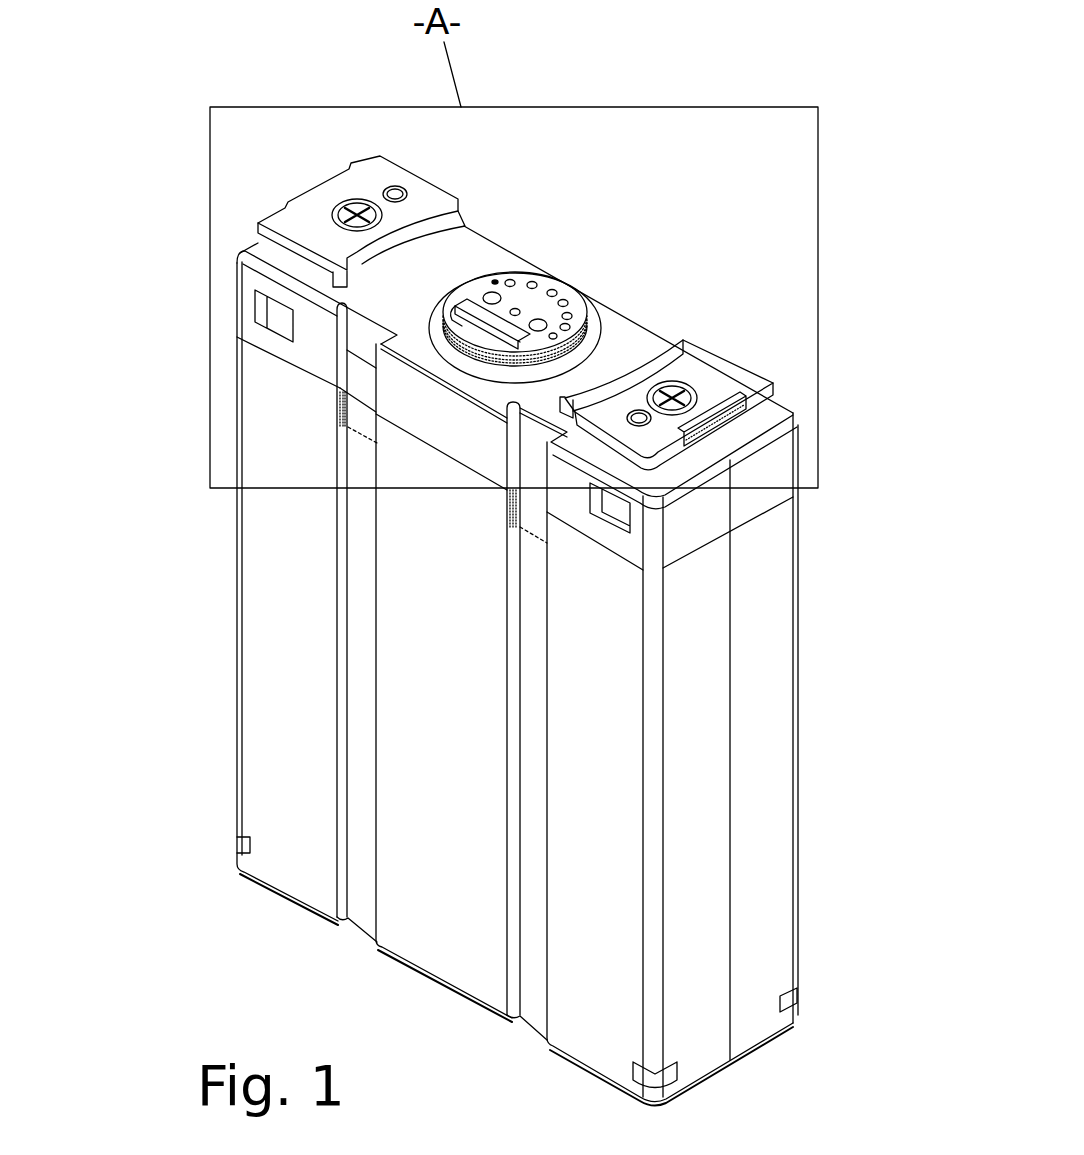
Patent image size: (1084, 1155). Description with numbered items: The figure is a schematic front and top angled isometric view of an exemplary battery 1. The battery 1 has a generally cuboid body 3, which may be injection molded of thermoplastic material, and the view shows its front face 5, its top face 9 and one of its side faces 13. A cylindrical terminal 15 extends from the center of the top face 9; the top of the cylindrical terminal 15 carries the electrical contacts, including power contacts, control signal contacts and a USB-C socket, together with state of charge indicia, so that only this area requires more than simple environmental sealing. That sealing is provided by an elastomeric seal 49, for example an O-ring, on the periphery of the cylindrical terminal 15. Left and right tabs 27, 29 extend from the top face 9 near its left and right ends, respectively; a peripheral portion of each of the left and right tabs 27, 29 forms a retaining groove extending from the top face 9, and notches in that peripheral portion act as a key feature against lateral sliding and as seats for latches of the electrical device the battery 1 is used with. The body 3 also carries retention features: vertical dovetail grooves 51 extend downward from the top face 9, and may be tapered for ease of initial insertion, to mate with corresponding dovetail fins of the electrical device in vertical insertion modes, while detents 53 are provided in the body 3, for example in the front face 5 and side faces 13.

The battery 1 is at (282, 617).
The front face 5 is at (426, 683).
The body 3 is at (763, 920).
The top face 9 is at (487, 257).
The side faces 13 is at (755, 793).
The cylindrical terminal 15 is at (533, 300).
The left tab 27 is at (373, 177).
The right tab 29 is at (807, 308).
The elastomeric seal 49 is at (597, 332).
The vertical dovetail grooves 51 is at (360, 818).
The detents 53 is at (610, 503).